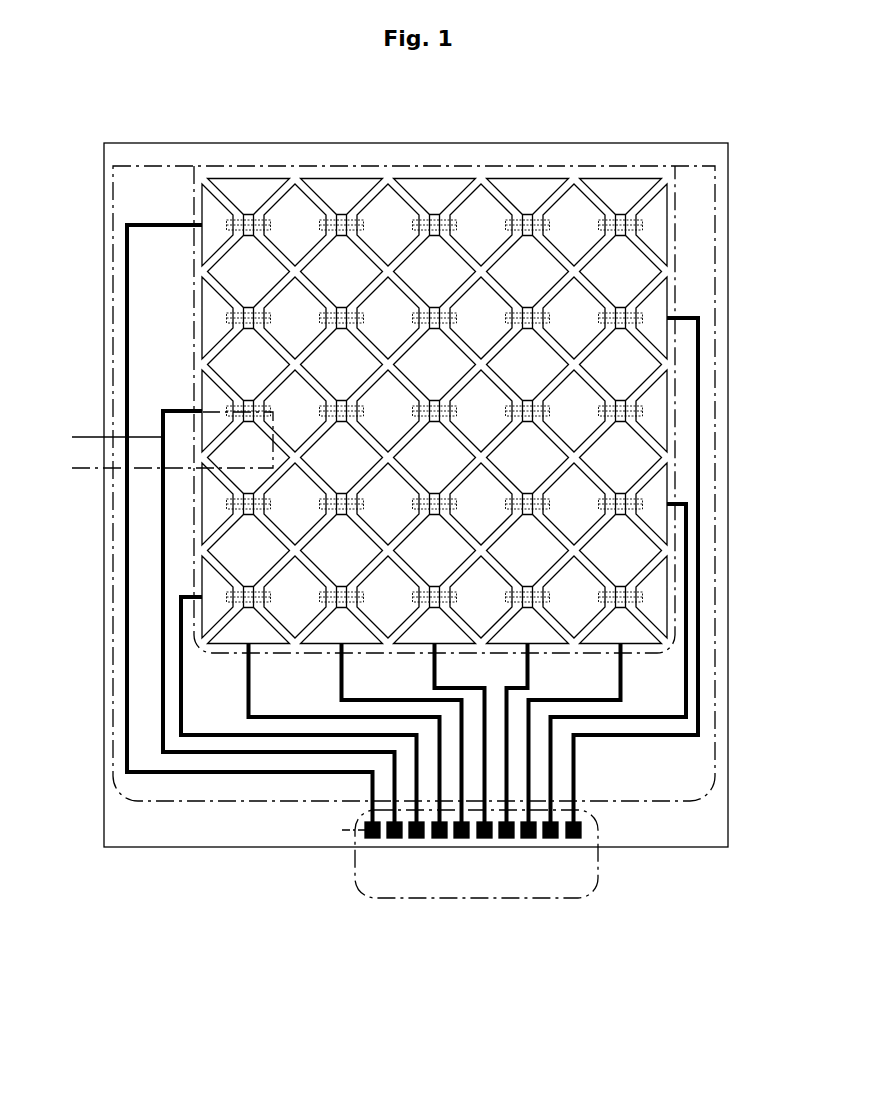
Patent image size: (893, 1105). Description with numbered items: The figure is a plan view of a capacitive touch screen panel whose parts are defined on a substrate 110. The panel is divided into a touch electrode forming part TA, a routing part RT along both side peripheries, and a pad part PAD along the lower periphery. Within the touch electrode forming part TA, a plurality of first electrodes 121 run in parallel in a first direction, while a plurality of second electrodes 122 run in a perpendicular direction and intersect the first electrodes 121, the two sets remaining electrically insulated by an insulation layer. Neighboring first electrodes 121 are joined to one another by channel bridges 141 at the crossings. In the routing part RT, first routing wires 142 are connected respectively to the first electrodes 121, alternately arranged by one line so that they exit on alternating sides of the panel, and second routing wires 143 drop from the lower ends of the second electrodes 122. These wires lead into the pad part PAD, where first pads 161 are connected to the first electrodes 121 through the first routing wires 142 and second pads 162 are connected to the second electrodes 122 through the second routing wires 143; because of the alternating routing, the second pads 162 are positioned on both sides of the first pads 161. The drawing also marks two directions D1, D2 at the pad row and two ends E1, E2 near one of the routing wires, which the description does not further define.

The substrate 110 is at (715, 821).
The first electrodes 121 is at (216, 212).
The second electrodes 122 is at (635, 275).
The channel bridges 141 is at (620, 216).
The first routing wires 142 is at (181, 630).
The second routing wires 143 is at (251, 673).
The first pads 161 is at (365, 847).
The second pads 162 is at (432, 847).
The routing part RT is at (146, 162).
The touch electrode forming part TA is at (418, 162).
The pad part PAD is at (510, 898).
The first direction D1 is at (343, 840).
The second direction D2 is at (428, 840).
The first end E1 is at (81, 468).
The second end E2 is at (81, 500).